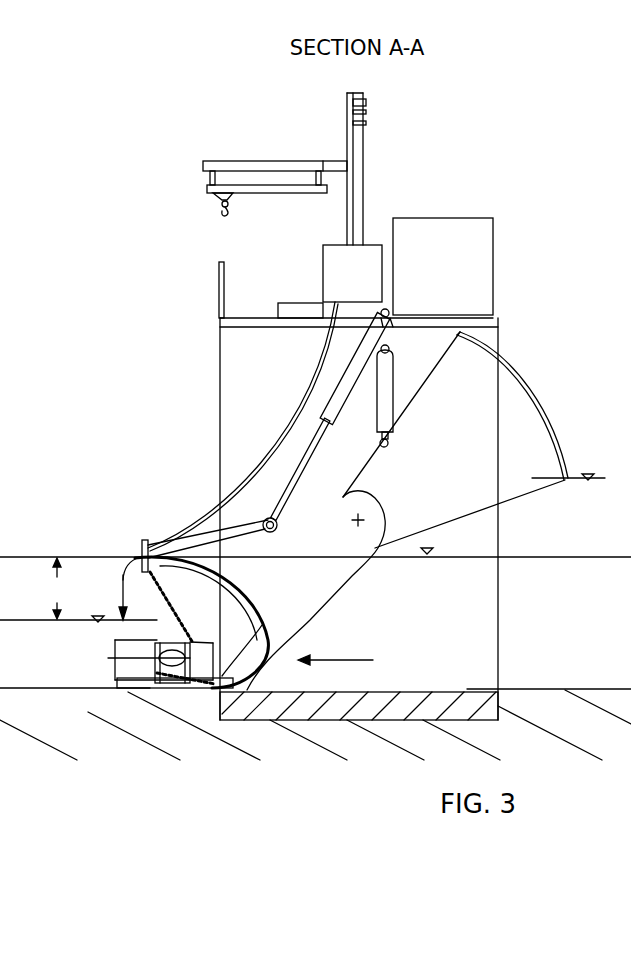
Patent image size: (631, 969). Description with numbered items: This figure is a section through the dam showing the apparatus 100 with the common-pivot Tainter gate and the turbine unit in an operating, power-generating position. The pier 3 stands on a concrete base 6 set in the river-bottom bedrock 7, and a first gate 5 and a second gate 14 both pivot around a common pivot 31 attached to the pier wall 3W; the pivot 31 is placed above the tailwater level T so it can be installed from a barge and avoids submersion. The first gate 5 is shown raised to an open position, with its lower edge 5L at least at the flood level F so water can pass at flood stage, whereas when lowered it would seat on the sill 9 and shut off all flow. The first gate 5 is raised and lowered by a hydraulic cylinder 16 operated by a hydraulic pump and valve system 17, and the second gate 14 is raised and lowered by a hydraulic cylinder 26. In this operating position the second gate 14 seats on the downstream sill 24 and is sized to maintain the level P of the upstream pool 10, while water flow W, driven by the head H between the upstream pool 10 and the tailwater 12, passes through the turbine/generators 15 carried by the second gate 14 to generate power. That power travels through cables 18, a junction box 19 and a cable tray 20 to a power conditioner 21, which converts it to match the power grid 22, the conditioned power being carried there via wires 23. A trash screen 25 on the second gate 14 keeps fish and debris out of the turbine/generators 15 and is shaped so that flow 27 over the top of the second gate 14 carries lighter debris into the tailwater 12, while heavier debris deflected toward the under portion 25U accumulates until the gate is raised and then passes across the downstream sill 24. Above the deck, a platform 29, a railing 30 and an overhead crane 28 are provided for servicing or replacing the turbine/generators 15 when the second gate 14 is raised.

The embodiment of the inventive apparatus 100 is at (466, 127).
The pier 3 is at (240, 368).
The pier wall 3W is at (268, 416).
The first gate 5 is at (518, 372).
The lower edge of gate 5L is at (567, 482).
The concrete base 6 is at (272, 720).
The river-bottom bedrock 7 is at (568, 735).
The sill 9 is at (492, 697).
The upstream pool 10 is at (570, 617).
The tailwater 12 is at (62, 677).
The second gate 14 is at (157, 612).
The turbine/generator 15 is at (167, 675).
The hydraulic cylinder 16 is at (382, 408).
The hydraulic pump and valve system 17 is at (430, 275).
The cables 18 is at (207, 503).
The junction box 19 is at (141, 540).
The cable tray 20 is at (123, 578).
The power conditioner 21 is at (340, 285).
The power grid 22 is at (357, 105).
The wires 23 is at (358, 178).
The downstream sill 24 is at (247, 690).
The trash screen 25 is at (307, 622).
The under portion of trash screen 25U is at (240, 668).
The hydraulic cylinder 26 is at (372, 339).
The flow 27 is at (122, 588).
The overhead crane 28 is at (221, 199).
The platform 29 is at (296, 312).
The railing 30 is at (217, 280).
The common pivot 31 is at (358, 522).
The flood level F is at (568, 460).
The water level of headwater P is at (426, 539).
The head H is at (57, 588).
The tailwater level T is at (97, 605).
The water flow W is at (358, 661).